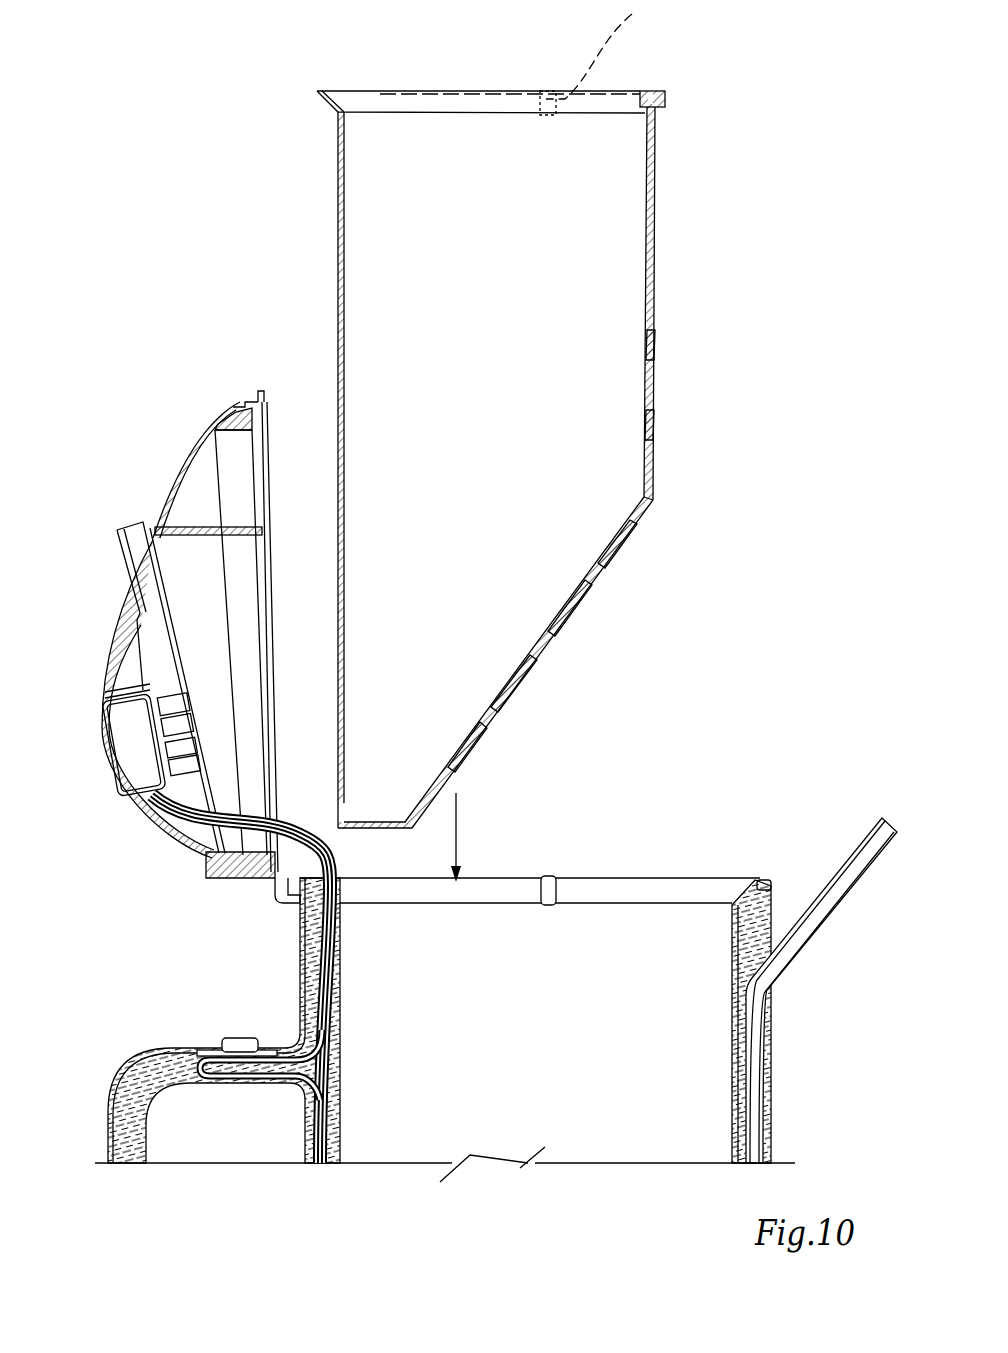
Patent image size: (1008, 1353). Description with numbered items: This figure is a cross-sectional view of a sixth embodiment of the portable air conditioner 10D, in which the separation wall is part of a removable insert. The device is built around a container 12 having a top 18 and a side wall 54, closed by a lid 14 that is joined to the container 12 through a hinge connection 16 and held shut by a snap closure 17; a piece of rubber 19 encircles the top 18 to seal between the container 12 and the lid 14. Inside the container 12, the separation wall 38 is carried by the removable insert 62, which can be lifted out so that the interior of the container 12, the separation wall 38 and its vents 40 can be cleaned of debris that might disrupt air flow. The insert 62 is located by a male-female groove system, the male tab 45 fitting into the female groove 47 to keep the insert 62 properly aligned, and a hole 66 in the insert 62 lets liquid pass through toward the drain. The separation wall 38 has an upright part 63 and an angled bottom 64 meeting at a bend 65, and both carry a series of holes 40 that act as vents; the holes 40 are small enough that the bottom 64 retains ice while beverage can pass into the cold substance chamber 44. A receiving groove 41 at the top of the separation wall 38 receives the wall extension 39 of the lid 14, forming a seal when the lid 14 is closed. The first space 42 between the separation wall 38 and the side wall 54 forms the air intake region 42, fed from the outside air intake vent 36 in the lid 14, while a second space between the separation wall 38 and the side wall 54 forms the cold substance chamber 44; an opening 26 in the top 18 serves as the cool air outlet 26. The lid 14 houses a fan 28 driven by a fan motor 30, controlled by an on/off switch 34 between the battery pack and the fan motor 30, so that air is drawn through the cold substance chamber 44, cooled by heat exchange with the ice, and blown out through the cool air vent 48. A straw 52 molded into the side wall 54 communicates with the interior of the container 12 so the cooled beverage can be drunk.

The cooking appliance 10D is at (830, 541).
The container 12 is at (296, 960).
The lid 14 is at (105, 750).
The hinge connection 16 is at (270, 891).
The snap closure 17 is at (268, 405).
The top 18 is at (760, 878).
The piece of rubber 19 is at (245, 436).
The cool air outlet 26 is at (530, 120).
The fan 28 is at (165, 690).
The fan motor 30 is at (130, 742).
The on/off switch 34 is at (238, 1040).
The outside air intake vent 36 is at (190, 456).
The separation wall 38 is at (658, 240).
The wall extension 39 is at (240, 536).
The holes 40 is at (655, 346).
The receiving groove 41 is at (655, 94).
The air intake region 42 is at (705, 1005).
The cold substance chamber 44 is at (456, 150).
The male tab 45 is at (604, 49).
The female groove 47 is at (548, 890).
The cool air vent 48 is at (130, 528).
The straw 52 is at (880, 830).
The side wall 54 is at (300, 926).
The removable insert 62 is at (358, 90).
The upright part 63 is at (656, 175).
The bottom 64 is at (541, 680).
The hopper corner 65 is at (656, 500).
The hole 66 is at (345, 812).